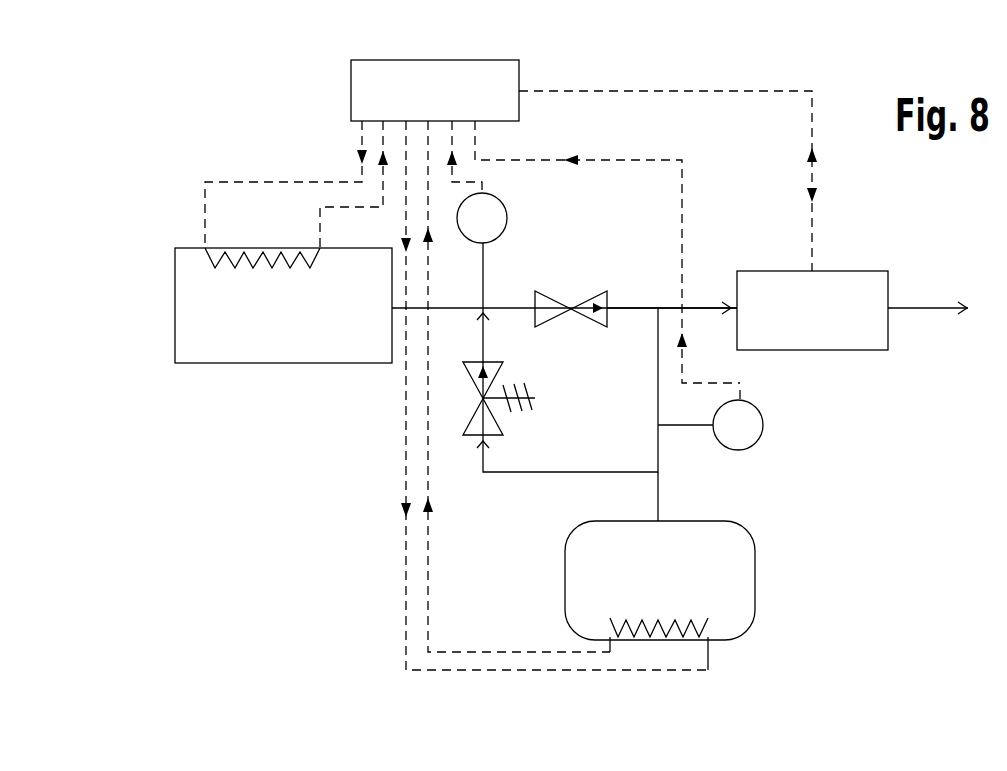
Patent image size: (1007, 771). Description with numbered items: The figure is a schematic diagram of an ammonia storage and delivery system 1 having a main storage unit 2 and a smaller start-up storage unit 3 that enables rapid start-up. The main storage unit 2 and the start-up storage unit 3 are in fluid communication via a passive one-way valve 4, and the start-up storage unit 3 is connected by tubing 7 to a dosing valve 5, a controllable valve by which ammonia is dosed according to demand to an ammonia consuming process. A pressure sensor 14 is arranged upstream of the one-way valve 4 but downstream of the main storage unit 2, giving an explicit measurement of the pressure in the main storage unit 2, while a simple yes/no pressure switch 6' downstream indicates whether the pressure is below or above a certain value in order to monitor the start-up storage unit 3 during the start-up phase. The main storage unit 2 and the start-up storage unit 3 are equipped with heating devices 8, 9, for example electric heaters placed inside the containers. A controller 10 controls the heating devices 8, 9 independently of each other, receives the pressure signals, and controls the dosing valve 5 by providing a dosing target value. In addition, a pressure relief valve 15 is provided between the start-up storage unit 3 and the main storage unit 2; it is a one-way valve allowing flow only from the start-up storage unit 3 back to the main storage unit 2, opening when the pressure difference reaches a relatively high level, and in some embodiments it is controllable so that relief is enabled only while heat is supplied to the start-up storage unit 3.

The ammonia storage and delivery system 1 is at (811, 71).
The main storage unit 2 is at (242, 348).
The start-up storage unit 3 is at (755, 565).
The passive one-way valve 4 is at (544, 303).
The dosing valve 5 is at (850, 340).
The pressure switch 6' is at (776, 425).
The tubing 7 is at (626, 308).
The heating device 8 is at (212, 268).
The heating device 9 is at (688, 630).
The controller 10 is at (455, 73).
The pressure sensor 14 is at (500, 220).
The pressure relief valve 15 is at (500, 366).